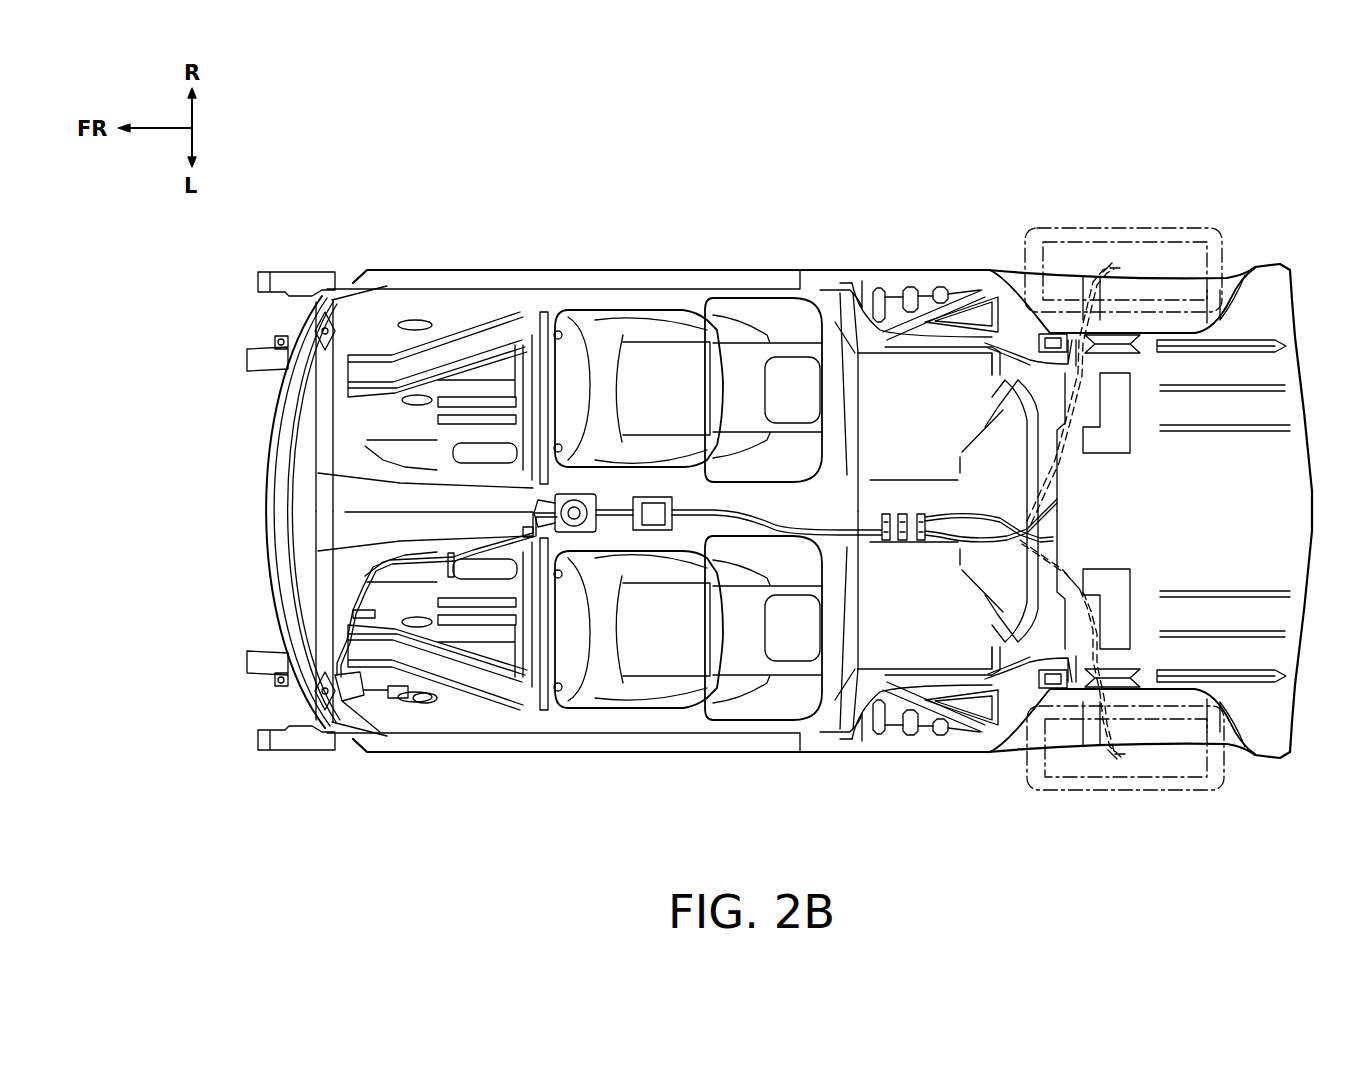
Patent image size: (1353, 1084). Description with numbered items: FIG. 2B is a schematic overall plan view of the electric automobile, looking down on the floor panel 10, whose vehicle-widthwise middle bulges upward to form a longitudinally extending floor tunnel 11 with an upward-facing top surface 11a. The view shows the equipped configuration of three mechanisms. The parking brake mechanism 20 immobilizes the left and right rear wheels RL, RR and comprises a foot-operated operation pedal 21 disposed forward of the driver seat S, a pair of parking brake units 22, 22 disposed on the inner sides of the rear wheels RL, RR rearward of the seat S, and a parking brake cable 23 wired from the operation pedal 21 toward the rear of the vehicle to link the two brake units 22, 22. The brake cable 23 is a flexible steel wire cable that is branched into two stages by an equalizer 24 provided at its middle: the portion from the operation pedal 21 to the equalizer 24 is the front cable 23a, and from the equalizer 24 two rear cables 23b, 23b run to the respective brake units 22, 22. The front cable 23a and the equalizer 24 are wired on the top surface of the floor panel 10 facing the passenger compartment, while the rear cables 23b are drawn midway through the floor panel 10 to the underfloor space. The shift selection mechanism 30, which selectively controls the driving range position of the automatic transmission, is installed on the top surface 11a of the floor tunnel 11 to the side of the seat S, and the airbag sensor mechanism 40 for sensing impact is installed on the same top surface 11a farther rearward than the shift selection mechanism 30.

The floor panel 10 is at (447, 310).
The floor tunnel 11 is at (402, 478).
The top surface 11a is at (385, 517).
The parking brake mechanism 20 is at (480, 543).
The operation pedal 21 is at (385, 705).
The parking brake unit 22 is at (1095, 232).
The parking brake cable 23 is at (788, 528).
The front cable 23a is at (505, 602).
The rear cable 23b is at (1062, 457).
The equalizer 24 is at (907, 545).
The shift selection mechanism 30 is at (578, 492).
The airbag sensor mechanism 40 is at (660, 535).
The seat S is at (657, 662).
The right rear wheel RR is at (1172, 228).
The left rear wheel RL is at (1180, 795).